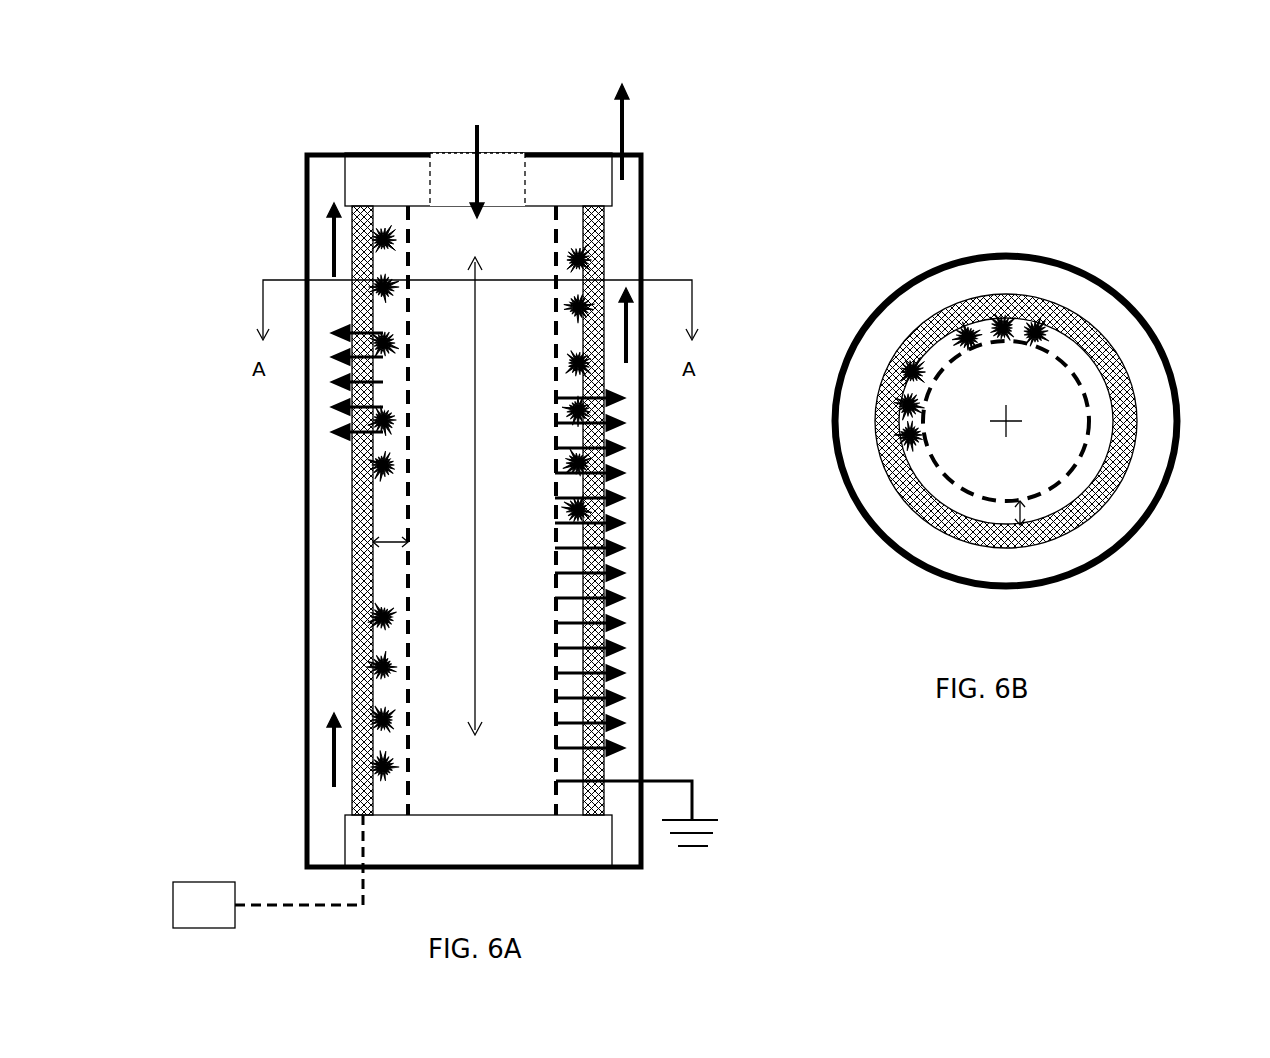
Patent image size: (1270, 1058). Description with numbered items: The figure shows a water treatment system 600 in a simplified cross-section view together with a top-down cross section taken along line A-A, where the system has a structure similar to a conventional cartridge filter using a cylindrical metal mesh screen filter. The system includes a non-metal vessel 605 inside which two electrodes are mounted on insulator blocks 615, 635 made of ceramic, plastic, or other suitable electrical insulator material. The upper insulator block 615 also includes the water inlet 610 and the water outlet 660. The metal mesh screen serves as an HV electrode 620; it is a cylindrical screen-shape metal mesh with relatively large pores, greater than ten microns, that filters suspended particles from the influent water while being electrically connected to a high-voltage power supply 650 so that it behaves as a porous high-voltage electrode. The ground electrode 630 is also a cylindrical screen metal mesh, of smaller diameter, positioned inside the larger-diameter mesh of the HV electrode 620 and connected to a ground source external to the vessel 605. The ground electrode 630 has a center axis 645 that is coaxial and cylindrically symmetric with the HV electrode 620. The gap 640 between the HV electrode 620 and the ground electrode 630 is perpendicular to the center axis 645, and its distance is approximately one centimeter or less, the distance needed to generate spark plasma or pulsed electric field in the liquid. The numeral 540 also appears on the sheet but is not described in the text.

In FIG. 6A, the water treatment system 600 is at (243, 105).
In FIG. 6B, the water treatment system 600 is at (900, 163).
In FIG. 6A, the non-metal vessel 605 is at (305, 466).
In FIG. 6B, the non-metal vessel 605 is at (843, 338).
In FIG. 6A, the water inlet 610 is at (473, 150).
In FIG. 6A, the insulator block 615 is at (385, 152).
In FIG. 6A, the HV electrode 620 is at (353, 625).
In FIG. 6B, the HV electrode 620 is at (873, 390).
In FIG. 6A, the ground electrode 630 is at (556, 652).
In FIG. 6B, the ground electrode 630 is at (940, 458).
In FIG. 6A, the insulator block 635 is at (612, 843).
In FIG. 6A, the gap 640 is at (390, 540).
In FIG. 6B, the gap 640 is at (1015, 527).
In FIG. 6A, the center axis 645 is at (475, 465).
In FIG. 6B, the center axis 645 is at (1006, 421).
In FIG. 6A, the high-voltage power supply 650 is at (208, 880).
In FIG. 6A, the water outlet 660 is at (623, 150).
In FIG. 6B, the reference numeral 540 is at (1027, 843).